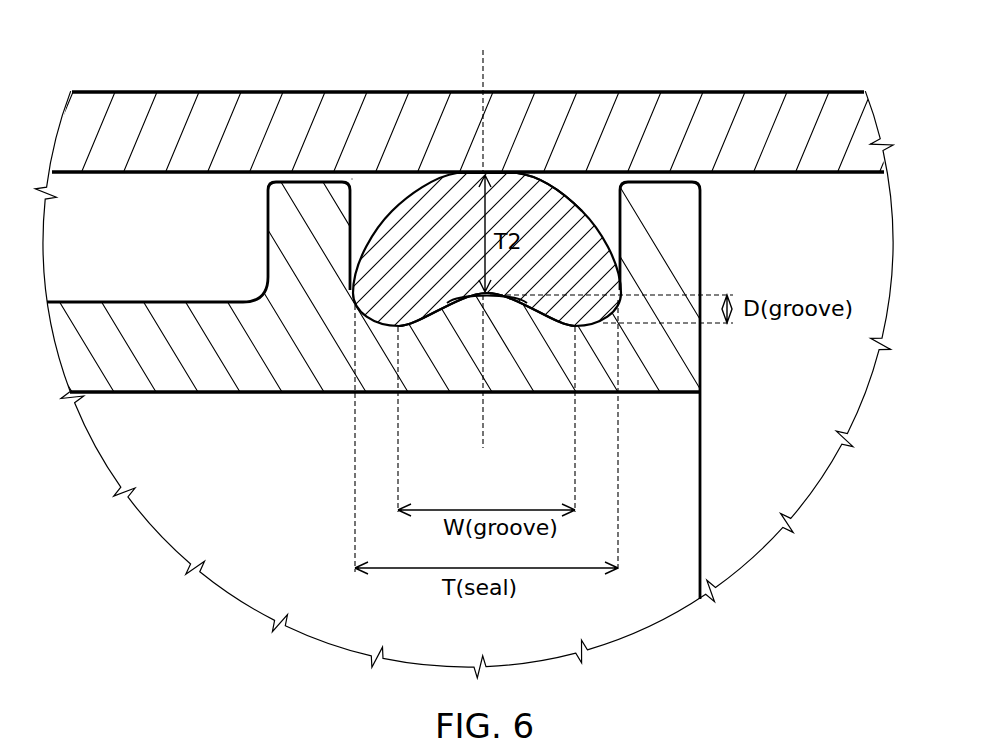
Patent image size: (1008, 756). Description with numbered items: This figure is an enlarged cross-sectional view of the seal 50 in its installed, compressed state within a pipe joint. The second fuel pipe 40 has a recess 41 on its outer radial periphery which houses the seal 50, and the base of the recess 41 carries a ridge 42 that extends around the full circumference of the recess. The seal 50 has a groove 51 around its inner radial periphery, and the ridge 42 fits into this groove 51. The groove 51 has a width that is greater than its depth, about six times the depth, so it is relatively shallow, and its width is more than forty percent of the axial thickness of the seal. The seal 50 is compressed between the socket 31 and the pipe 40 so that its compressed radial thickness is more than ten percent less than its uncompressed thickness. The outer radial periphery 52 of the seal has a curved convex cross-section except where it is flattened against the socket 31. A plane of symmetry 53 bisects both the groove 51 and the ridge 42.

The socket 31 is at (830, 175).
The second fuel pipe 40 is at (372, 390).
The recess 41 is at (389, 203).
The ridge 42 is at (448, 296).
The seal 50 is at (470, 378).
The groove 51 is at (474, 295).
The outer radial periphery 52 is at (567, 178).
The plane of symmetry 53 is at (480, 72).